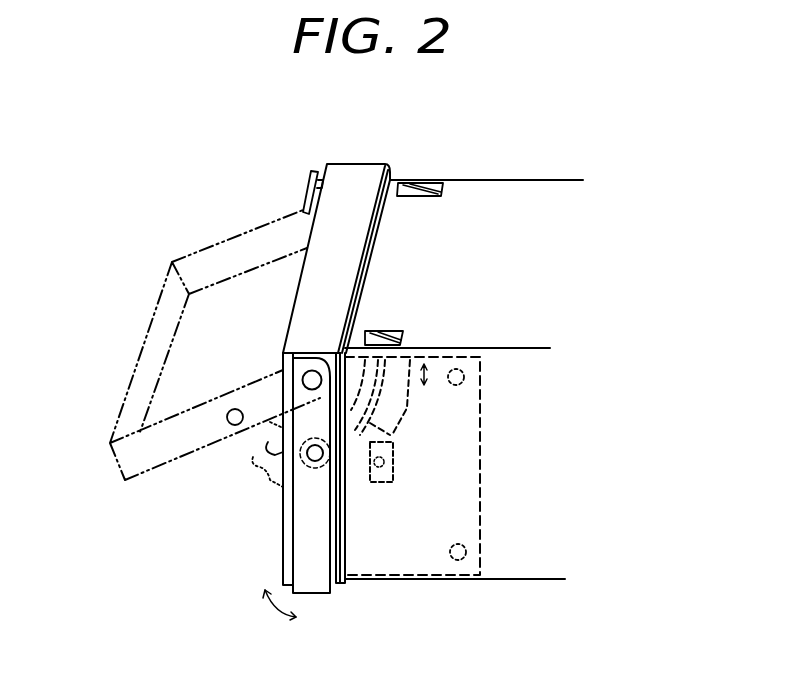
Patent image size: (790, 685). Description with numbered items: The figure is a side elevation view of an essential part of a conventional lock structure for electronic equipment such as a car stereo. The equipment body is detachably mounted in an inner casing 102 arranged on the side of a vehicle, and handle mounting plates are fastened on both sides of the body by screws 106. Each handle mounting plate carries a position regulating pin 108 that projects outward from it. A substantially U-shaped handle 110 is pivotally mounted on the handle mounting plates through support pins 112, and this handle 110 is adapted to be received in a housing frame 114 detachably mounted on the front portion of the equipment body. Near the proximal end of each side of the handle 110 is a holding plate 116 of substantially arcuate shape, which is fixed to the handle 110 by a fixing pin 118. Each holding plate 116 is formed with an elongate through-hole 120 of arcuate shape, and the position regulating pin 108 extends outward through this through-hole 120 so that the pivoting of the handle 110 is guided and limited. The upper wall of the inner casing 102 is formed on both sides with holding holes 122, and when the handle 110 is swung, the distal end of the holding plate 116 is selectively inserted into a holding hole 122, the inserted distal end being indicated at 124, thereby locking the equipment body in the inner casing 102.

The inner casing 102 is at (515, 180).
The screws 106 is at (462, 370).
The position regulating pin 108 is at (353, 430).
The handle 110 is at (165, 337).
The support pins 112 is at (313, 370).
The housing frame 114 is at (377, 163).
The holding plate 116 is at (400, 404).
The fixing pin 118 is at (235, 425).
The elongate through-hole 120 is at (390, 435).
The holding holes 122 is at (443, 180).
The inserted distal end of holding plate 124 is at (417, 183).